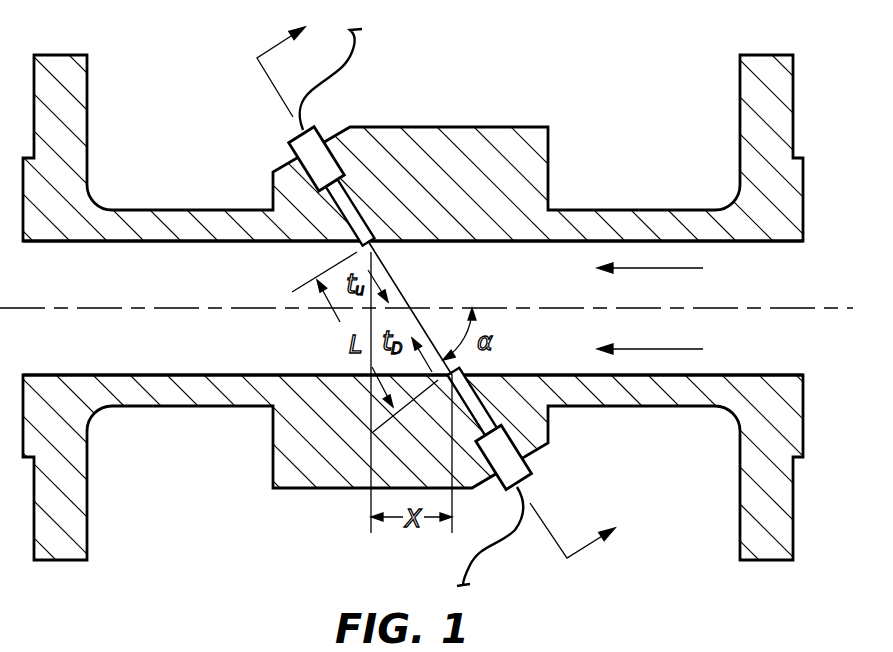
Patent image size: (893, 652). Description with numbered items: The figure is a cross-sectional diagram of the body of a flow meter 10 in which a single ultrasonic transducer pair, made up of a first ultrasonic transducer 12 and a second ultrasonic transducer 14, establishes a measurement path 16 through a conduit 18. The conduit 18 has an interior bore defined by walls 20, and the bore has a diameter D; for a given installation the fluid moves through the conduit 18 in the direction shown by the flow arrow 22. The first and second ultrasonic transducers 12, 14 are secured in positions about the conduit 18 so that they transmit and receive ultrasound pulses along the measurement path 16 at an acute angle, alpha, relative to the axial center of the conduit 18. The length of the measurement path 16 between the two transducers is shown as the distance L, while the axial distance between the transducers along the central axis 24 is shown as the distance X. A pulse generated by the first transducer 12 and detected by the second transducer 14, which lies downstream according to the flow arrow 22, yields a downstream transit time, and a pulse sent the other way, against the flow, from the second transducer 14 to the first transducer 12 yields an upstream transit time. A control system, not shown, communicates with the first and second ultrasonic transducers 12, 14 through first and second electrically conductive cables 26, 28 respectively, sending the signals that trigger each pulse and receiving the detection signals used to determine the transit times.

The flow meter 10 is at (205, 142).
The first ultrasonic transducer 12 is at (521, 436).
The second ultrasonic transducer 14 is at (343, 154).
The measurement path 16 is at (388, 264).
The conduit 18 is at (799, 272).
The walls 20 is at (583, 241).
The fluid flow direction arrow 22 is at (655, 269).
The central axis 24 is at (151, 308).
The first electrically conductive cable 26 is at (500, 545).
The second electrically conductive cable 28 is at (324, 80).